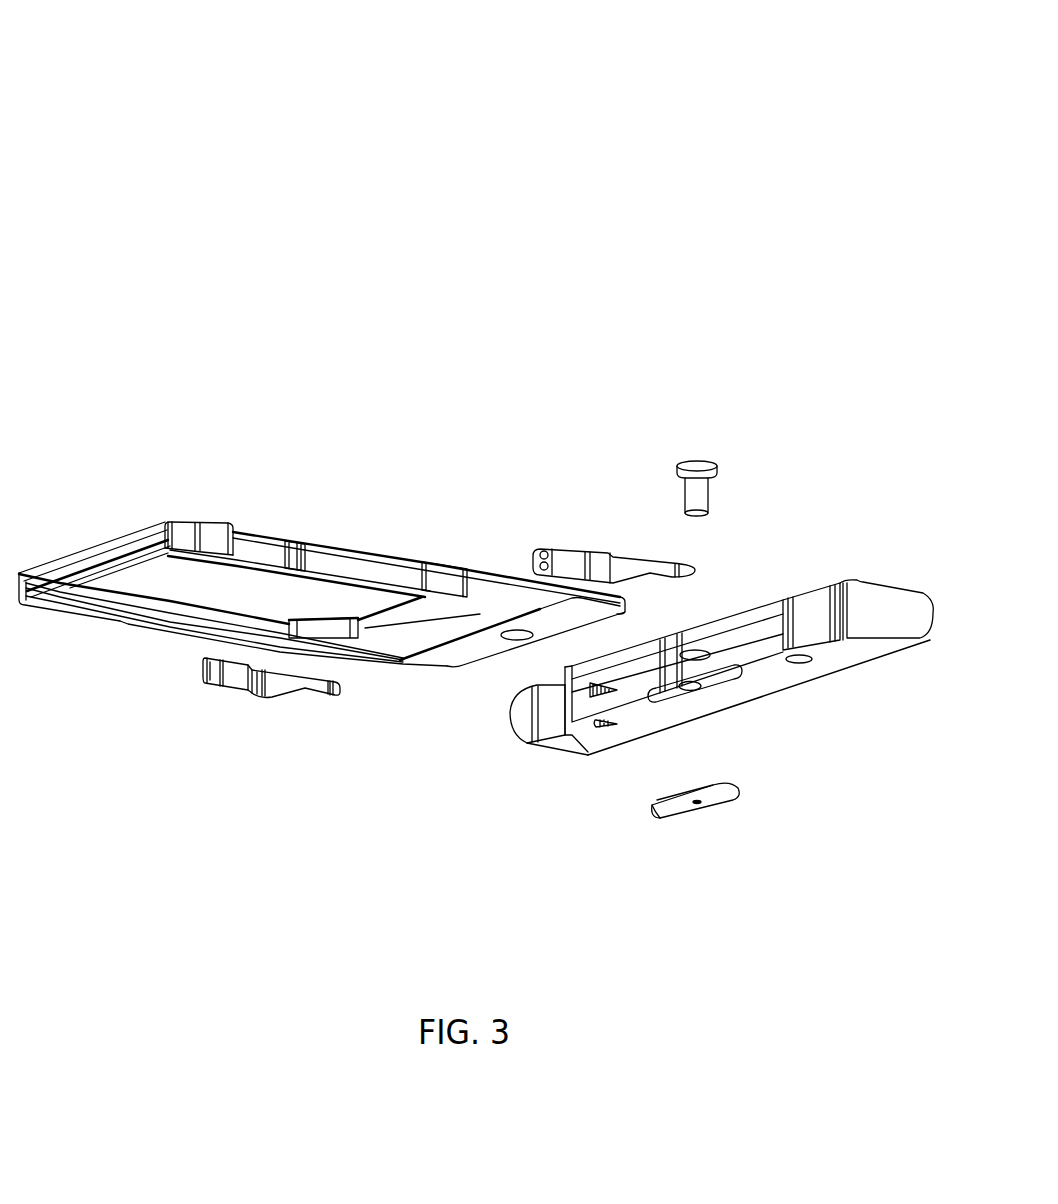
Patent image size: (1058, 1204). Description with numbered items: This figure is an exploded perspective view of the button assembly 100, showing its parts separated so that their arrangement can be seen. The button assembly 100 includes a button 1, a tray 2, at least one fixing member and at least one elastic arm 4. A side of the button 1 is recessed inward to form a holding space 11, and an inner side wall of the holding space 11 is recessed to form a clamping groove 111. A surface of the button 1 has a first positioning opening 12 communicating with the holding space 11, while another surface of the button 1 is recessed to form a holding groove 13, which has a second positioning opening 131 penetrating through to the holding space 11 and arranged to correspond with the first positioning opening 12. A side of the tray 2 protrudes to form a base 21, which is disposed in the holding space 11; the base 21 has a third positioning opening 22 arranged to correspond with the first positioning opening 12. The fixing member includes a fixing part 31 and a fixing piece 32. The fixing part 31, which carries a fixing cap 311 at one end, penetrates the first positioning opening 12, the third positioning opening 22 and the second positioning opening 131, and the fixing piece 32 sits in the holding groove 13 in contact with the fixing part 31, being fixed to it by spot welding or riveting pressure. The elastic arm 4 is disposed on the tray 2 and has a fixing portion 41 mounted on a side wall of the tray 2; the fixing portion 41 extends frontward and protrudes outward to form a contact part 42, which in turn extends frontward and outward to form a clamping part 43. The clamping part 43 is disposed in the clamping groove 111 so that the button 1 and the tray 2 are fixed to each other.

The button assembly 100 is at (80, 57).
The button 1 is at (797, 677).
The holding space 11 is at (768, 625).
The clamping groove 111 is at (595, 702).
The first positioning opening 12 is at (693, 650).
The holding groove 13 is at (730, 680).
The second positioning opening 131 is at (698, 683).
The tray 2 is at (167, 632).
The base 21 is at (445, 655).
The third positioning opening 22 is at (515, 638).
The fixing part 31 is at (692, 493).
The fixing cap 311 is at (677, 469).
The fixing piece 32 is at (718, 800).
The elastic arm 4 is at (555, 558).
The fixing portion 41 is at (222, 685).
The contact part 42 is at (262, 690).
The clamping part 43 is at (336, 700).